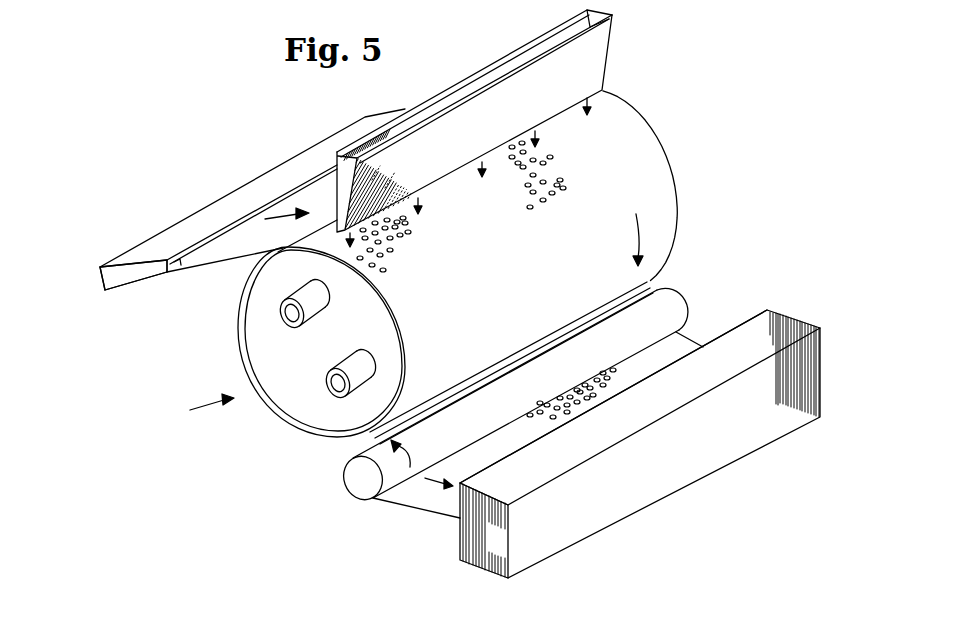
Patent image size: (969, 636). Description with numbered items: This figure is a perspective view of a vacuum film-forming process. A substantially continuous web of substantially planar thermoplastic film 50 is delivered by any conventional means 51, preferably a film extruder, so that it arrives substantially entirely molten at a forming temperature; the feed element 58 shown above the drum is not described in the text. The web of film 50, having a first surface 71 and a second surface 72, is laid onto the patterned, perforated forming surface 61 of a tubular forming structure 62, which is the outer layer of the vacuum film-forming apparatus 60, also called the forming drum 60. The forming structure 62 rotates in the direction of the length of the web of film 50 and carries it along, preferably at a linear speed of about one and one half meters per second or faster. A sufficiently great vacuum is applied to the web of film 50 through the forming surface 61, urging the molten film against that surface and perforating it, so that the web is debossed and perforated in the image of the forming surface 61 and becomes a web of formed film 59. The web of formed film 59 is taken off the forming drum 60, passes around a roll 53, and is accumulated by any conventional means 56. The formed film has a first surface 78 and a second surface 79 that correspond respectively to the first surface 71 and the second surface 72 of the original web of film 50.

The web of substantially planar thermoplastic film 50 is at (190, 264).
The conventional means 51 is at (193, 220).
The roll 53 is at (662, 300).
The conventional means 56 is at (665, 473).
The hopper 58 is at (594, 60).
The web of formed film 59 is at (645, 169).
The vacuum film-forming apparatus 60 is at (196, 411).
The forming surface 61 is at (247, 340).
The forming structure 62 is at (292, 420).
The first surface 71 is at (251, 233).
The second surface 72 is at (311, 195).
The first surface 78 is at (438, 502).
The second surface 79 is at (673, 352).